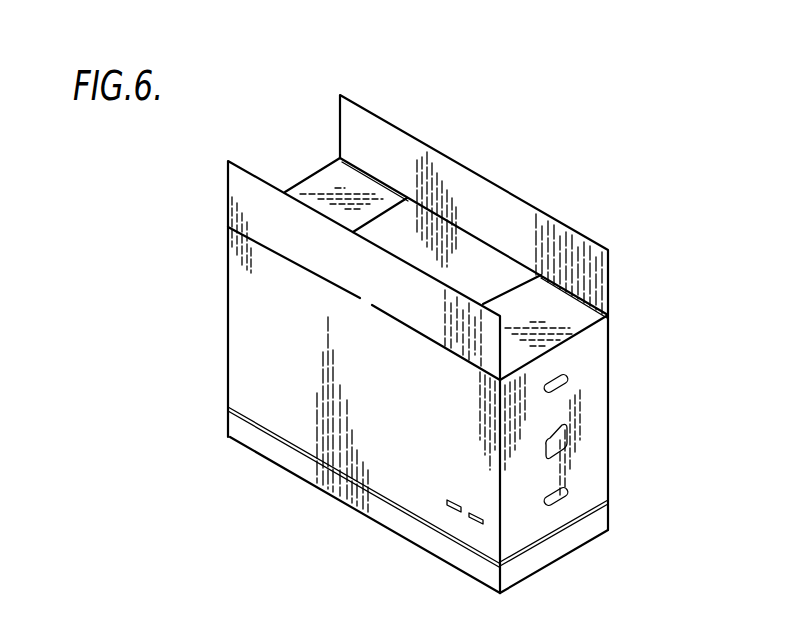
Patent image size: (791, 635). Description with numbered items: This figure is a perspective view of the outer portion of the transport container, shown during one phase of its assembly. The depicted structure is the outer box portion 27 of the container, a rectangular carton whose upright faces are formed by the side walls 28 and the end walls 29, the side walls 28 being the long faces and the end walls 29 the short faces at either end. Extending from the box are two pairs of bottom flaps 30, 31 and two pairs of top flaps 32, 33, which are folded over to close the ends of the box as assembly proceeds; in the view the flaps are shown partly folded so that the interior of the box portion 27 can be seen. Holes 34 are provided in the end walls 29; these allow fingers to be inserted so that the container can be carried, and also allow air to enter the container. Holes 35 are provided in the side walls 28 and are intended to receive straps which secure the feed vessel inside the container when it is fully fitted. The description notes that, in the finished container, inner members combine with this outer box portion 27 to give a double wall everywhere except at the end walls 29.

The outer box portion 27 is at (224, 380).
The side walls 28 is at (275, 423).
The end walls 29 is at (298, 183).
The bottom flaps 30 is at (243, 187).
The bottom flaps 31 is at (327, 187).
The top flaps 32 is at (417, 535).
The top flaps 33 is at (576, 548).
The holes 34 is at (565, 488).
The holes 35 is at (477, 517).